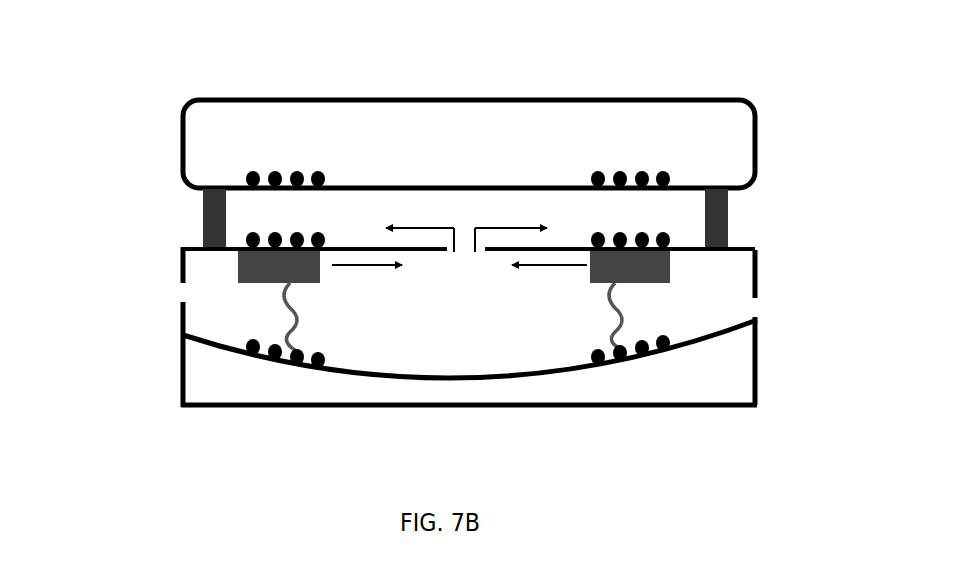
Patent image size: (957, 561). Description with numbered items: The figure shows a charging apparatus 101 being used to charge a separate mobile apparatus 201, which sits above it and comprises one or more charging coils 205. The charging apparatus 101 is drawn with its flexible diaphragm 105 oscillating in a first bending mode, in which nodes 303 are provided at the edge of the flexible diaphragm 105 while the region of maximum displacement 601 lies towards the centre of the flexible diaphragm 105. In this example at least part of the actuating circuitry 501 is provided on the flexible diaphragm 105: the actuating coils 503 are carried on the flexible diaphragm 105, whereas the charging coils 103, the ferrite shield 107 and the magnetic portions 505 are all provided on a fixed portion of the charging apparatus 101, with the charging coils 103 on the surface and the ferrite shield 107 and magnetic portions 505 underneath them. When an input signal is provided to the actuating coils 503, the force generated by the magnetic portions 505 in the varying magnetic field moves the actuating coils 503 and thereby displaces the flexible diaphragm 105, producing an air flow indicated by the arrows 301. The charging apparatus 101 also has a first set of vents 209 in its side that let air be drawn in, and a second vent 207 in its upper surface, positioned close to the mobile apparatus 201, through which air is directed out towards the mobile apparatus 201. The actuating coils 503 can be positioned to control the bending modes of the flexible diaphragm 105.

The mobile apparatus 201 is at (295, 100).
The arrows 301 is at (352, 260).
The first set of vents 209 is at (465, 254).
The charging coils 205 is at (597, 175).
The charging apparatus 101 is at (177, 265).
The charging coils 103 is at (670, 232).
The ferrite shield 107 is at (670, 258).
The magnetic portions 505 is at (237, 277).
The nodes 303 is at (185, 333).
The actuating coils 503 is at (225, 366).
The actuating circuitry 501 is at (673, 353).
The region of maximum displacement 601 is at (480, 380).
The flexible diaphragm 105 is at (353, 377).
The second vent 207 is at (757, 303).